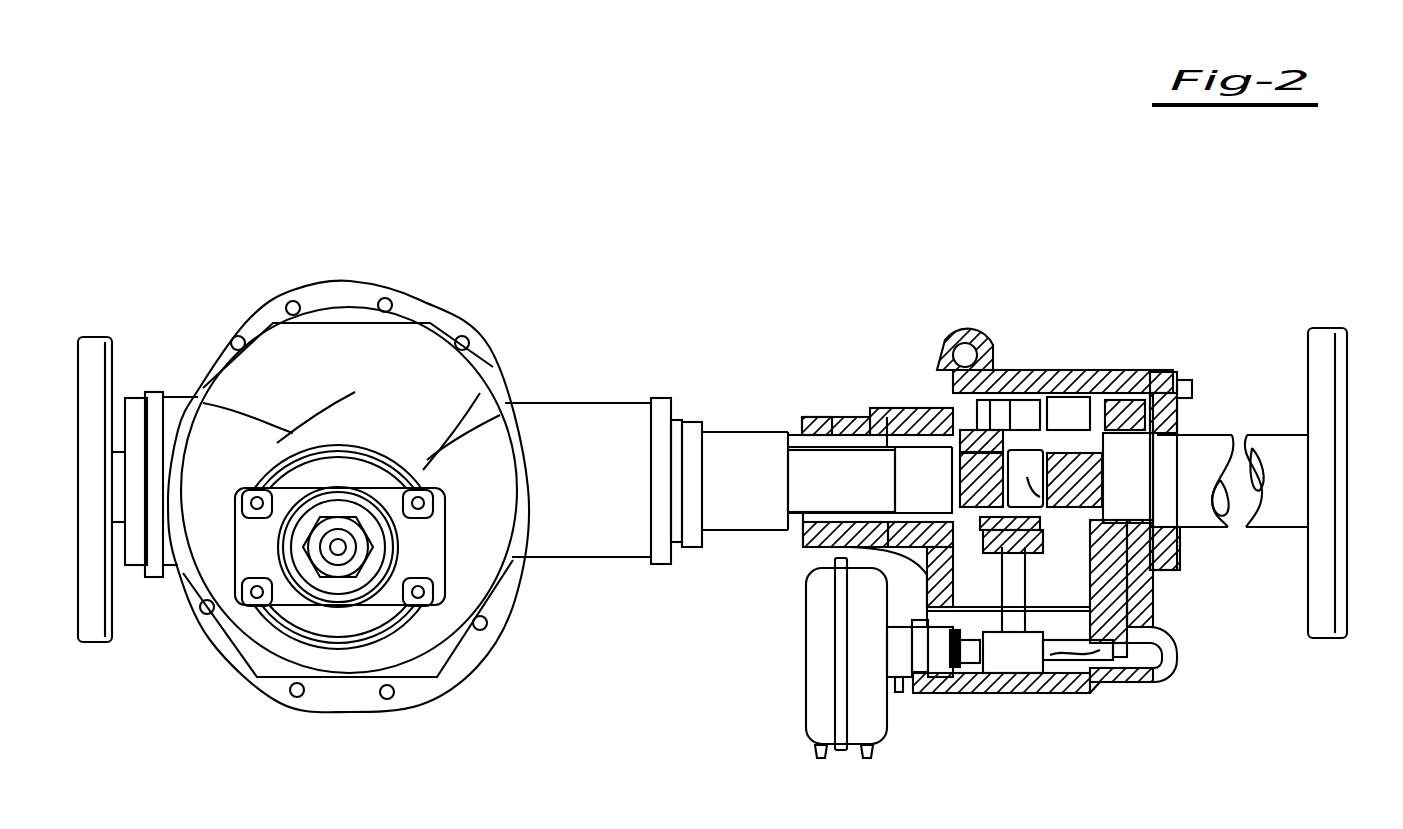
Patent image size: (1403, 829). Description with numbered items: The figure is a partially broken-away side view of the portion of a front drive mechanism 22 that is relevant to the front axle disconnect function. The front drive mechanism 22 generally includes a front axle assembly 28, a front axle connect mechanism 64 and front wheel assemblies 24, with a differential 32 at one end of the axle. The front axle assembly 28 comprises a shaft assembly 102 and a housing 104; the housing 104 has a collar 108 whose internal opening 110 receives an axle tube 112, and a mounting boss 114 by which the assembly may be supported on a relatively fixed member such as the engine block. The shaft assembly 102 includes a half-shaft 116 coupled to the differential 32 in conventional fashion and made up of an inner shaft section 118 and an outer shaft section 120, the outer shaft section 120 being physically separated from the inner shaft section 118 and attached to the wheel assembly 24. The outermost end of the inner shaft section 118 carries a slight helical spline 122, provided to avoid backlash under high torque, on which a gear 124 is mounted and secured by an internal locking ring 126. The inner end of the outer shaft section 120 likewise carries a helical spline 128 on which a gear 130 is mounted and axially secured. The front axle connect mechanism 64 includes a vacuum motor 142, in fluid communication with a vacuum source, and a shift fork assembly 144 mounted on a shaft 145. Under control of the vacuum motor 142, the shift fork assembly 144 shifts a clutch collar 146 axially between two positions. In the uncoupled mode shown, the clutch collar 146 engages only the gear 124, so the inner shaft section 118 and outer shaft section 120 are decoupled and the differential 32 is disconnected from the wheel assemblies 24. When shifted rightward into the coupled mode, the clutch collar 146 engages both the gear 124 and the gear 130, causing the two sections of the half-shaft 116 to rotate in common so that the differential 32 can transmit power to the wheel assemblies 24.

The front drive mechanism 22 is at (700, 337).
The front wheel assembly 24 is at (98, 340).
The front axle assembly 28 is at (572, 401).
The differential 32 is at (437, 377).
The front axle connect mechanism 64 is at (1102, 366).
The shaft assembly 102 is at (727, 426).
The housing 104 is at (1035, 695).
The collar 108 is at (827, 417).
The internal opening 110 is at (797, 433).
The axle tube 112 is at (828, 495).
The mounting boss 114 is at (965, 343).
The half-shaft 116 is at (790, 496).
The inner shaft section 118 is at (796, 548).
The outer shaft section 120 is at (1165, 550).
The helical spline 122 is at (956, 515).
The gear 124 is at (963, 437).
The internal locking ring 126 is at (1046, 402).
The helical spline 128 is at (1155, 415).
The gear 130 is at (1127, 580).
The vacuum motor 142 is at (822, 706).
The shift fork assembly 144 is at (1107, 673).
The shaft 145 is at (1160, 672).
The clutch collar 146 is at (1012, 402).